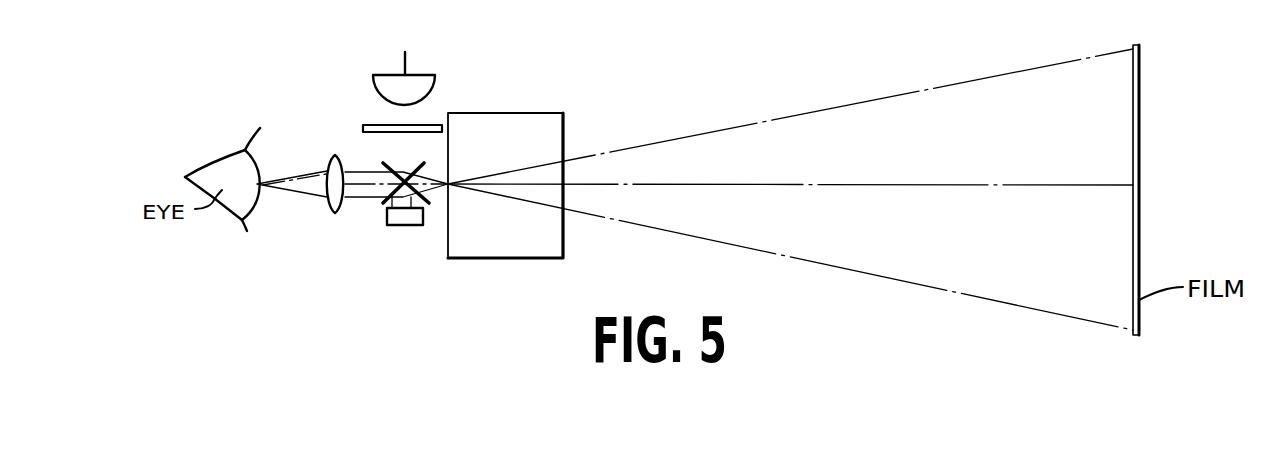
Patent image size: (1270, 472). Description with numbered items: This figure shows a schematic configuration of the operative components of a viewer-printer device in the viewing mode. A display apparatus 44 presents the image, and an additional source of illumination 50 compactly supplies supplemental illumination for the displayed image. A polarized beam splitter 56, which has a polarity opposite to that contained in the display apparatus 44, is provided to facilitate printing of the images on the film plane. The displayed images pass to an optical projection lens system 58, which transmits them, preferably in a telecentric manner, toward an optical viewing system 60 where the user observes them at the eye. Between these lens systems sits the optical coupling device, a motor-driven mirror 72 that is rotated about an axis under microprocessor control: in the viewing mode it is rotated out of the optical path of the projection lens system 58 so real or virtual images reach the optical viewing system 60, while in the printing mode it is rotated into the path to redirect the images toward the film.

The display apparatus 44 is at (400, 227).
The additional source of illumination 50 is at (386, 74).
The polarized beam splitter 56 is at (372, 123).
The optical projection lens system 58 is at (507, 260).
The optical viewing system 60 is at (330, 149).
The mirror 72 is at (410, 167).